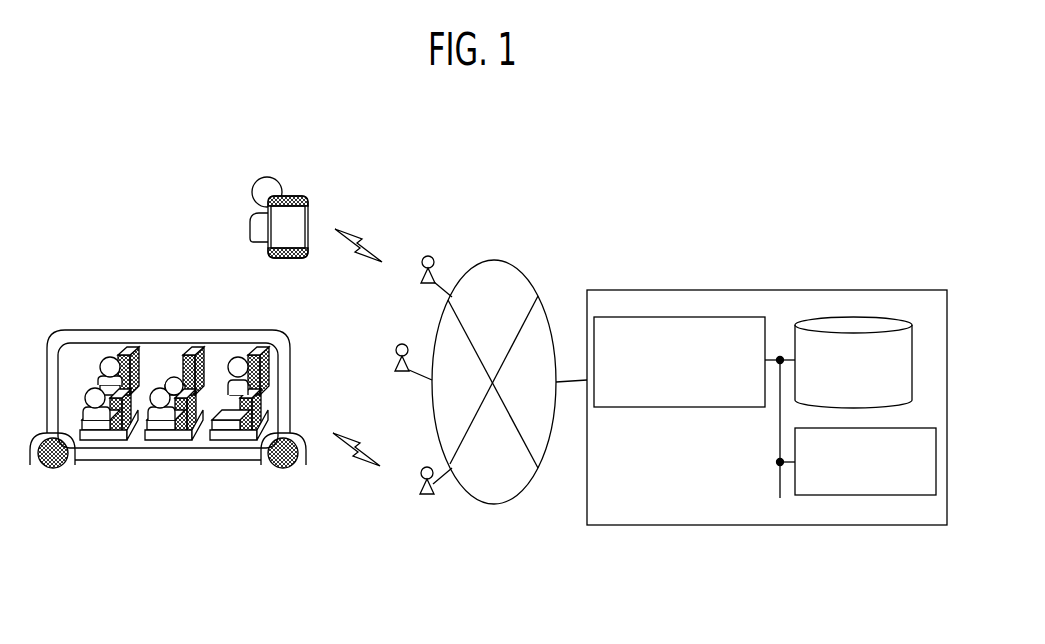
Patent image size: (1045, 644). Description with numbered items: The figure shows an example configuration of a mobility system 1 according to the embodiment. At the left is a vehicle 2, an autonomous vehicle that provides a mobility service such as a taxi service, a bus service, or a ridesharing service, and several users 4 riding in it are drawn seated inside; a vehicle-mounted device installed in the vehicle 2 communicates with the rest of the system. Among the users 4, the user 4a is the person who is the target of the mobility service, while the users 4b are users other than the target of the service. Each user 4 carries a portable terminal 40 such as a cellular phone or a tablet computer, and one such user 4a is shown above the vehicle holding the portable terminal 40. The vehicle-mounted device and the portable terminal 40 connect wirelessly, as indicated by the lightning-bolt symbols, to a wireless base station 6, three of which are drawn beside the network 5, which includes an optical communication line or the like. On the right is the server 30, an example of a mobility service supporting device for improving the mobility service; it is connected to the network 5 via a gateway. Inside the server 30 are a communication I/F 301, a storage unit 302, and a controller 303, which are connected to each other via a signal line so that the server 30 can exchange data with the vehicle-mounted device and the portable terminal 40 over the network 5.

The mobility system 1 is at (604, 197).
The vehicle 2 is at (168, 330).
The user 4 is at (159, 322).
The user 4a is at (106, 357).
The user 4b is at (230, 375).
The portable terminal 40 is at (298, 197).
The network 5 is at (494, 260).
The wireless base station 6 is at (427, 255).
The server 30 is at (680, 290).
The communication I/F 301 is at (690, 407).
The storage unit 302 is at (850, 317).
The controller 303 is at (872, 495).